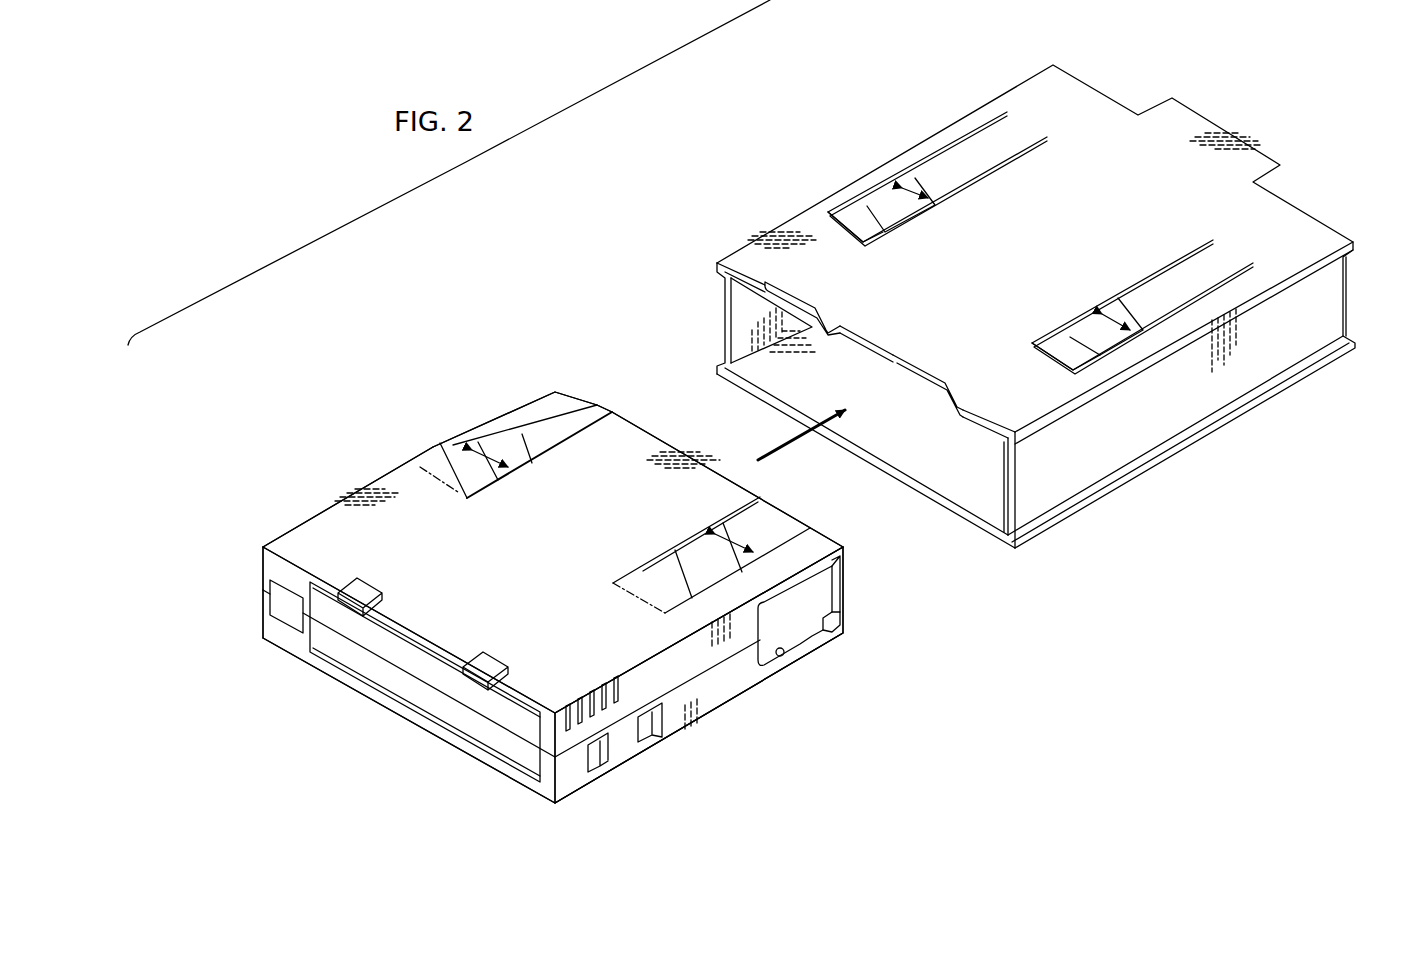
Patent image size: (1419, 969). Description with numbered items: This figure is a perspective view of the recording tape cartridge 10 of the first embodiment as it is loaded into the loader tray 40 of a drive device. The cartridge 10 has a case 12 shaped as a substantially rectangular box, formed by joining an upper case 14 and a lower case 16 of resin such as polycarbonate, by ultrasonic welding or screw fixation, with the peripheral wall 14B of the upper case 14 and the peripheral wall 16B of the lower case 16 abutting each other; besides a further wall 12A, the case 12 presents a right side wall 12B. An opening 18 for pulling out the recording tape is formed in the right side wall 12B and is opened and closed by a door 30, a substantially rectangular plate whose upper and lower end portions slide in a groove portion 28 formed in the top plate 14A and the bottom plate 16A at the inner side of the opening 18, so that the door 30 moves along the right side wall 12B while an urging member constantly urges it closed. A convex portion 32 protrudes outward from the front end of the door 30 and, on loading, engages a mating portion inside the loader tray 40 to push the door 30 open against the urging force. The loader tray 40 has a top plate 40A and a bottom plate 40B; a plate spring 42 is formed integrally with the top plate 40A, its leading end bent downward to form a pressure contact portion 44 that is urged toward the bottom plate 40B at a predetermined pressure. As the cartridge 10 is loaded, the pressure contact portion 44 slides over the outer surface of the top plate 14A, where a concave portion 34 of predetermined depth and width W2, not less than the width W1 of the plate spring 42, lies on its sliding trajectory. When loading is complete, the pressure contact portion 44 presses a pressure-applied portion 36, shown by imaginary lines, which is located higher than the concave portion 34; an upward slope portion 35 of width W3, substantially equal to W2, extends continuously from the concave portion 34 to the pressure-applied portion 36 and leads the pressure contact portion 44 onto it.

The recording tape cartridge 10 is at (475, 256).
The case 12 is at (372, 478).
The rear wall of case 12A is at (652, 440).
The right side wall 12B is at (722, 657).
The upper case 14 is at (316, 533).
The top plate 14A is at (347, 503).
The peripheral wall 14B is at (265, 560).
The lower case 16 is at (710, 712).
The bottom plate 16A is at (667, 737).
The peripheral wall 16B is at (262, 632).
The opening 18 is at (808, 613).
The groove portion 28 is at (782, 657).
The door 30 is at (848, 637).
The convex portion 32 is at (842, 592).
The concave portion 34 is at (550, 420).
The slope portion 35 is at (520, 470).
The pressure-applied portion 36 is at (447, 476).
The width of the concave portion W2 is at (725, 533).
The width of the slope portion W3 is at (490, 447).
The loader tray 40 is at (830, 190).
The top plate 40A is at (1085, 105).
The bottom plate 40B is at (950, 485).
The plate spring 42 is at (883, 195).
The pressure contact portion 44 is at (883, 232).
The width of the plate spring W1 is at (928, 195).